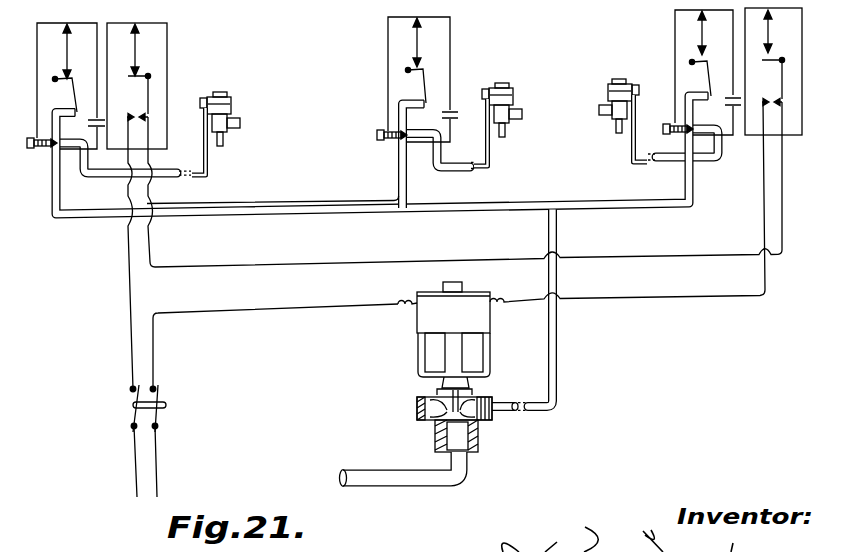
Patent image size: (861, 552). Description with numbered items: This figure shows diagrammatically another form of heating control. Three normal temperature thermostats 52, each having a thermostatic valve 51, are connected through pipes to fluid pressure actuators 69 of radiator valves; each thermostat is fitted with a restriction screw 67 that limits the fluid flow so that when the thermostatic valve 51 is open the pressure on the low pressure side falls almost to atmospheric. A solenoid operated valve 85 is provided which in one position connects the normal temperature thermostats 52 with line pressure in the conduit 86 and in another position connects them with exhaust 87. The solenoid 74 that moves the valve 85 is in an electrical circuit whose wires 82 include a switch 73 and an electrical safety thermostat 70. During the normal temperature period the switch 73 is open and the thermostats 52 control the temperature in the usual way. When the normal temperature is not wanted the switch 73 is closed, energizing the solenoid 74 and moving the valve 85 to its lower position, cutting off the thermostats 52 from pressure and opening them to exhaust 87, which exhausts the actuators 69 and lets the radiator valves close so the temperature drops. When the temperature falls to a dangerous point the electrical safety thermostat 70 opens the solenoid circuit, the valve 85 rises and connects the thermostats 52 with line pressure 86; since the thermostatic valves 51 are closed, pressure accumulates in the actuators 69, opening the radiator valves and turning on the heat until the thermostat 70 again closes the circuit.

The normal temperature thermostat 52 is at (52, 19).
The thermostatic valve 51 is at (76, 94).
The electrical safety thermostat 70 is at (168, 33).
The actuator of the radiator valve 69 is at (229, 102).
The restriction screw 67 is at (607, 92).
The wires of the solenoid circuit 82 is at (782, 168).
The switch 73 is at (167, 400).
The solenoid 74 is at (430, 313).
The exhaust 87 is at (418, 405).
The solenoid operated valve 85 is at (443, 418).
The conduit 86 is at (418, 476).